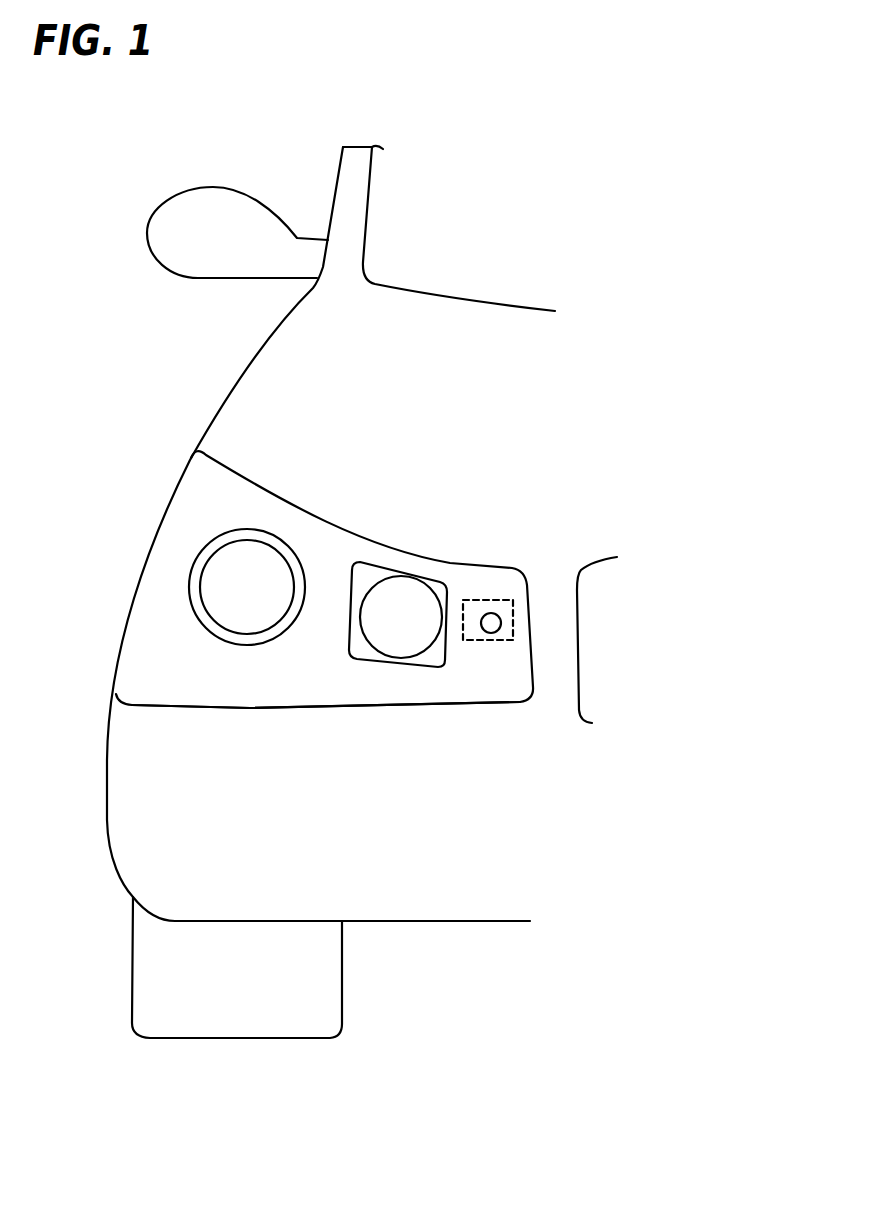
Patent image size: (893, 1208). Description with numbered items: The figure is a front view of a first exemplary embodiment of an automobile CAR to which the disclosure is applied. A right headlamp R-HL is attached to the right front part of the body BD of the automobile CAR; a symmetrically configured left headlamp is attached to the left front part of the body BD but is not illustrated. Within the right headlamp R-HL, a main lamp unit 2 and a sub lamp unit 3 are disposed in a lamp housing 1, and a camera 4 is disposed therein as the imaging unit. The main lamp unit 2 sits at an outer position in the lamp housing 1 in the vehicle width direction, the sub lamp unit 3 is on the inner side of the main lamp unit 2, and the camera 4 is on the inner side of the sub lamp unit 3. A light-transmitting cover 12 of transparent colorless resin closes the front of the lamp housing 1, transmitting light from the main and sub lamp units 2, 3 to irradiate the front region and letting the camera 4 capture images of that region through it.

The lamp housing 1 is at (350, 528).
The main lamp unit 2 is at (272, 530).
The sub lamp unit 3 is at (401, 572).
The camera 4 is at (502, 600).
The light-transmitting cover 12 is at (134, 680).
The automobile CAR is at (335, 185).
The body BD is at (252, 373).
The right headlamp R-HL is at (312, 561).